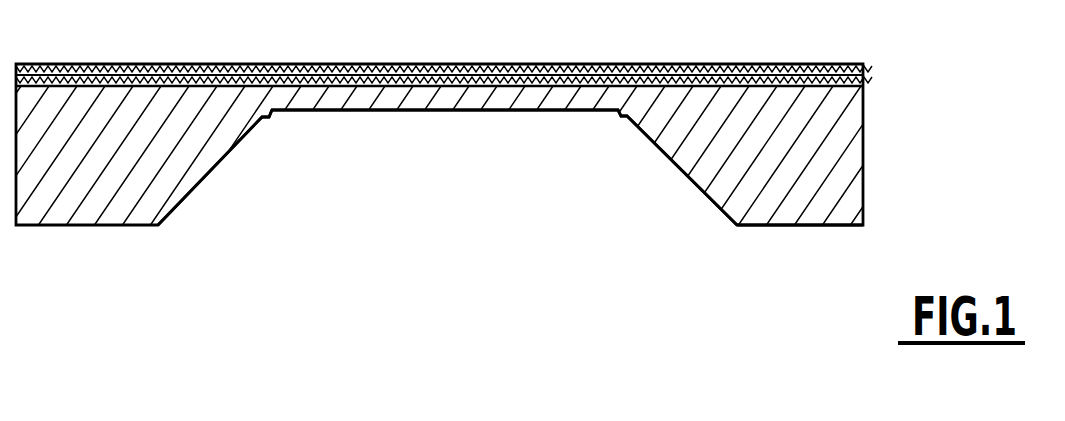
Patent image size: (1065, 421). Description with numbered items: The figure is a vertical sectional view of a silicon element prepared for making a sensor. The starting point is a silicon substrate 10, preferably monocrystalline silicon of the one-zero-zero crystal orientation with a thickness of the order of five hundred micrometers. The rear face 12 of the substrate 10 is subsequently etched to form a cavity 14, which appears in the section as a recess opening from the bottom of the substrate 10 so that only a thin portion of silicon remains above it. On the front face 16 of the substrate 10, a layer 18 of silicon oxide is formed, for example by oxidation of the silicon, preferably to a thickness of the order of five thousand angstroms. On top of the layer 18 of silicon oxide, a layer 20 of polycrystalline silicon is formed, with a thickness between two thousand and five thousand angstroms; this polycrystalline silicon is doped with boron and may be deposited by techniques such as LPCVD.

The silicon substrate 10 is at (837, 145).
The rear face 12 is at (833, 225).
The cavity 14 is at (483, 172).
The front face 16 is at (661, 77).
The layer of silicon oxide 18 is at (490, 75).
The layer of polycrystalline silicon 20 is at (332, 64).